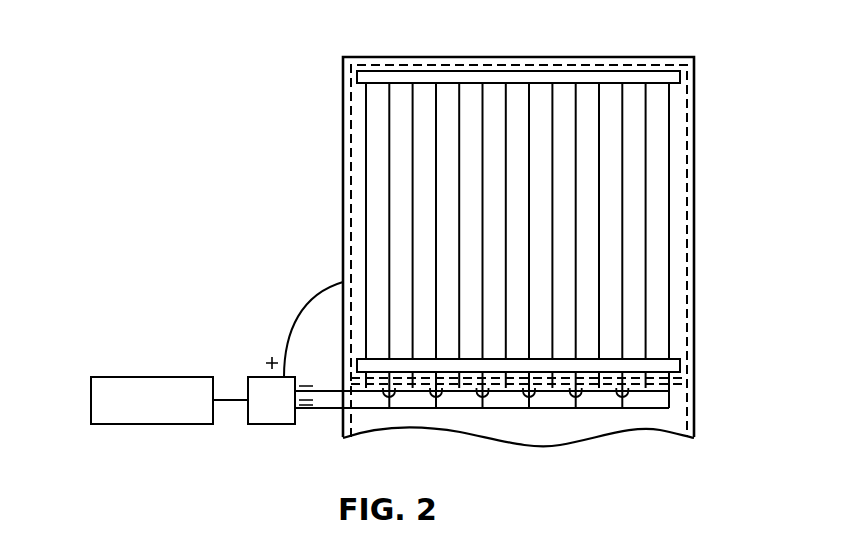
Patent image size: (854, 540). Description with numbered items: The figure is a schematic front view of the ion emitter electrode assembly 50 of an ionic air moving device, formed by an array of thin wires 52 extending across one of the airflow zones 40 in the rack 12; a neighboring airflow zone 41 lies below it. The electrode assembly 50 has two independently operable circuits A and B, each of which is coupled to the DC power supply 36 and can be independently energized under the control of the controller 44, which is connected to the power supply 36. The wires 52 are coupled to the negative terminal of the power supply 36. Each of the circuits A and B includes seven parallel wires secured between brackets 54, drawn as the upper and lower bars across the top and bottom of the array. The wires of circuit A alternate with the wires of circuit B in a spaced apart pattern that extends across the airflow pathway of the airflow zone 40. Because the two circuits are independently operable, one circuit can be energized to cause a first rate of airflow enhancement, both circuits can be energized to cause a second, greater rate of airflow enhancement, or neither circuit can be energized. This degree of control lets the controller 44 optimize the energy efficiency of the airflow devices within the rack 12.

The rack 12 is at (694, 116).
The airflow zone 40 is at (597, 65).
The airflow zone 41 is at (694, 409).
The ion emitter electrode assembly 50 is at (305, 58).
The thin wires 52 is at (413, 146).
The brackets 54 is at (515, 74).
The controller 44 is at (173, 377).
The DC power supply 36 is at (255, 377).
The circuit A is at (330, 391).
The circuit B is at (322, 408).